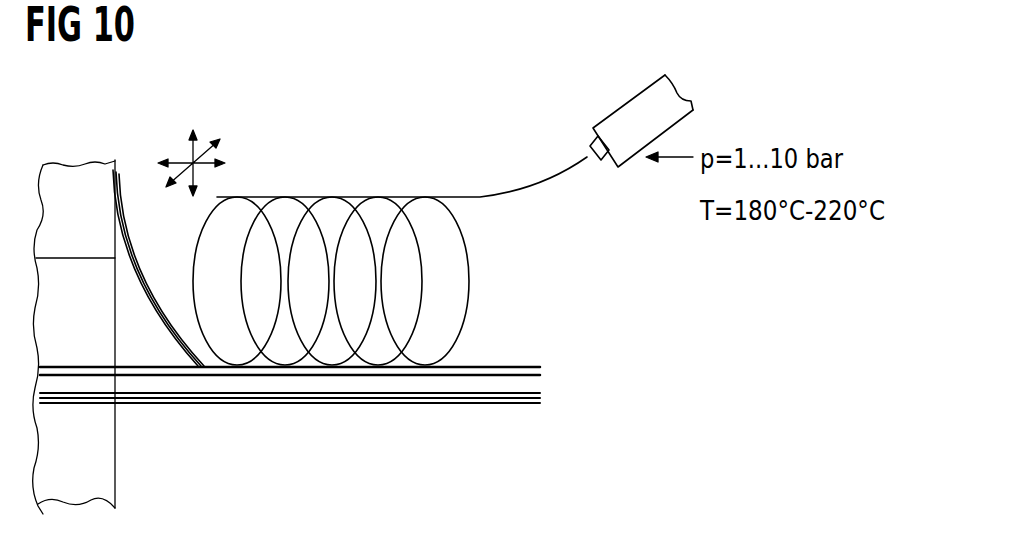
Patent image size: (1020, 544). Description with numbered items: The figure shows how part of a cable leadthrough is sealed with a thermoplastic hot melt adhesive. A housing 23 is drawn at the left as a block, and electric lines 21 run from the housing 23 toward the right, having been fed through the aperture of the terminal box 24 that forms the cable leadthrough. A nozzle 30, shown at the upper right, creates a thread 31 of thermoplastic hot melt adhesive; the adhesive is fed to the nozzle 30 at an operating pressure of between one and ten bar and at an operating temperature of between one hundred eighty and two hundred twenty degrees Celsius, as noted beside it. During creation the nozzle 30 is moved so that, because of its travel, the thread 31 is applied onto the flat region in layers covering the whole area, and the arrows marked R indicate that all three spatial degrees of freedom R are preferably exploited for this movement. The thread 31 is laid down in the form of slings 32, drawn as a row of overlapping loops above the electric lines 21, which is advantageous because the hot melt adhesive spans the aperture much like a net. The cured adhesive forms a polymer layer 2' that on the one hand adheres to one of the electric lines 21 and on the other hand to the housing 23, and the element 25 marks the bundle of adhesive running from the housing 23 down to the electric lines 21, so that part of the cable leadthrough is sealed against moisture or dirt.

The housing 23 is at (86, 173).
The electric lines 21 is at (505, 367).
The strand bundle 25 is at (120, 260).
The polymer layer 2' is at (161, 274).
The spatial degrees of freedom R is at (190, 162).
The terminal box 24 is at (331, 208).
The slings 32 is at (313, 197).
The thread 31 is at (465, 197).
The nozzle 30 is at (587, 132).